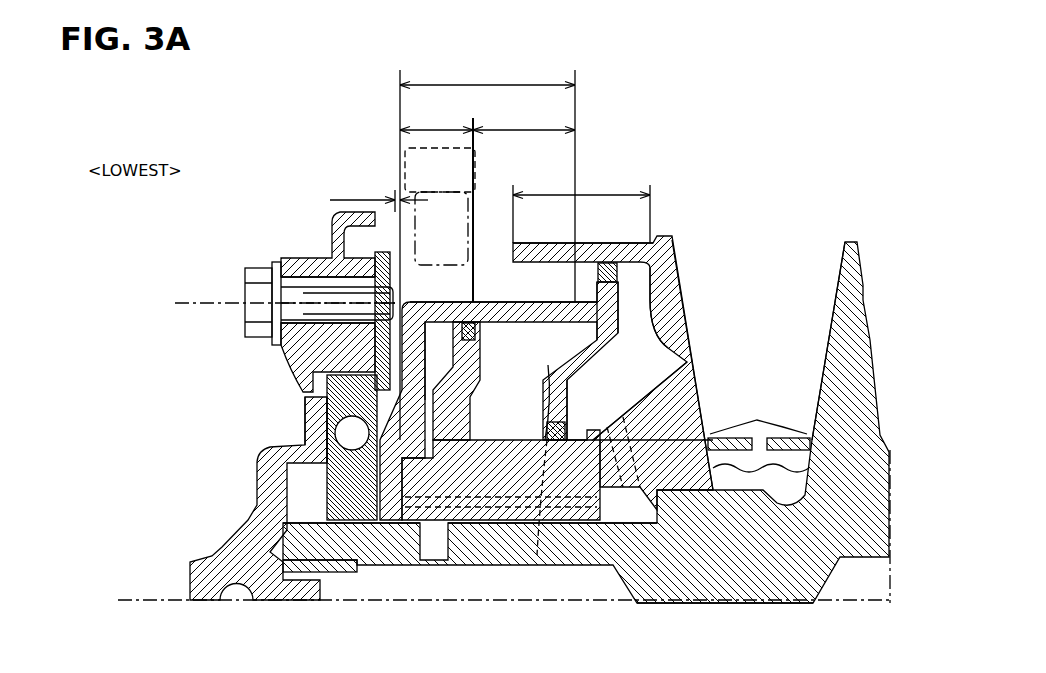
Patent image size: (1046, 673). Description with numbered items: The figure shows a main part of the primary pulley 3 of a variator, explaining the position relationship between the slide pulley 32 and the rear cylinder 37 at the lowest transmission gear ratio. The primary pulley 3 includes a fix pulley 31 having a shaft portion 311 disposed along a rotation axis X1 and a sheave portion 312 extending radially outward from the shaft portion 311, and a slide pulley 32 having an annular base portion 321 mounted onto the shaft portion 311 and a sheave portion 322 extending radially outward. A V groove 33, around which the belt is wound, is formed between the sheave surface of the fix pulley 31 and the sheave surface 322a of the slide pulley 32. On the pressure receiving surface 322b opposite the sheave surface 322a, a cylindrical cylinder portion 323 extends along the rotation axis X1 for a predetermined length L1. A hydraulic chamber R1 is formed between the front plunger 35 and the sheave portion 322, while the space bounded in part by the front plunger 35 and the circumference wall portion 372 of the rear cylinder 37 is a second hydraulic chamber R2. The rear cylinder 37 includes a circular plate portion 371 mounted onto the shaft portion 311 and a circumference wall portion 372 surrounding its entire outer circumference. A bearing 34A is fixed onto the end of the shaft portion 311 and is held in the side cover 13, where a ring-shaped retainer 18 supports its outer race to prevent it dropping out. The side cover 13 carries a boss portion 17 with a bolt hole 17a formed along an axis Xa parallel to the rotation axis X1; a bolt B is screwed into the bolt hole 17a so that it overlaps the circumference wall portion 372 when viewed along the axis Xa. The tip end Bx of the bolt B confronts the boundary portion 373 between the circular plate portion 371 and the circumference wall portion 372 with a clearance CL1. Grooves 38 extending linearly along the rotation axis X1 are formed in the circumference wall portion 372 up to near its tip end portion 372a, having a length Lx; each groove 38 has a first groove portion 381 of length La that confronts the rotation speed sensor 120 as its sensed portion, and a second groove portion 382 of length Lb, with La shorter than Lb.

The primary pulley 3 is at (828, 108).
The side cover 13 is at (243, 487).
The boss portion 17 is at (301, 294).
The bolt hole 17a is at (305, 283).
The retainer 18 is at (375, 357).
The fix pulley 31 is at (586, 381).
The slide pulley 32 is at (530, 357).
The V groove 33 is at (773, 410).
The bearing 34A is at (303, 390).
The front plunger 35 is at (640, 392).
The rear cylinder 37 is at (529, 418).
The groove 38 is at (499, 356).
The rotation speed sensor 120 is at (478, 162).
The shaft portion 311 is at (487, 552).
The sheave portion 312 is at (843, 337).
The annular base portion 321 is at (490, 548).
The sheave portion 322 is at (681, 358).
The sheave surface 322a is at (688, 262).
The pressure receiving surface 322b is at (683, 310).
The cylinder portion 323 is at (608, 243).
The circular plate portion 371 is at (412, 460).
The circumference wall portion 372 is at (543, 315).
The tip end portion 372a is at (600, 410).
The boundary portion 373 is at (425, 373).
The first groove portion 381 is at (440, 294).
The second groove portion 382 is at (502, 302).
The bolt B is at (245, 281).
The tip end Bx is at (393, 305).
The axis Xa is at (272, 303).
The rotation axis X1 is at (489, 533).
The hydraulic chamber R1 is at (641, 345).
The second hydraulic chamber R2 is at (423, 325).
The predetermined length L1 is at (581, 206).
The length of first groove portion La is at (436, 201).
The length of second groove portion Lb is at (524, 115).
The length of groove Lx is at (487, 249).
The clearance CL1 is at (379, 191).